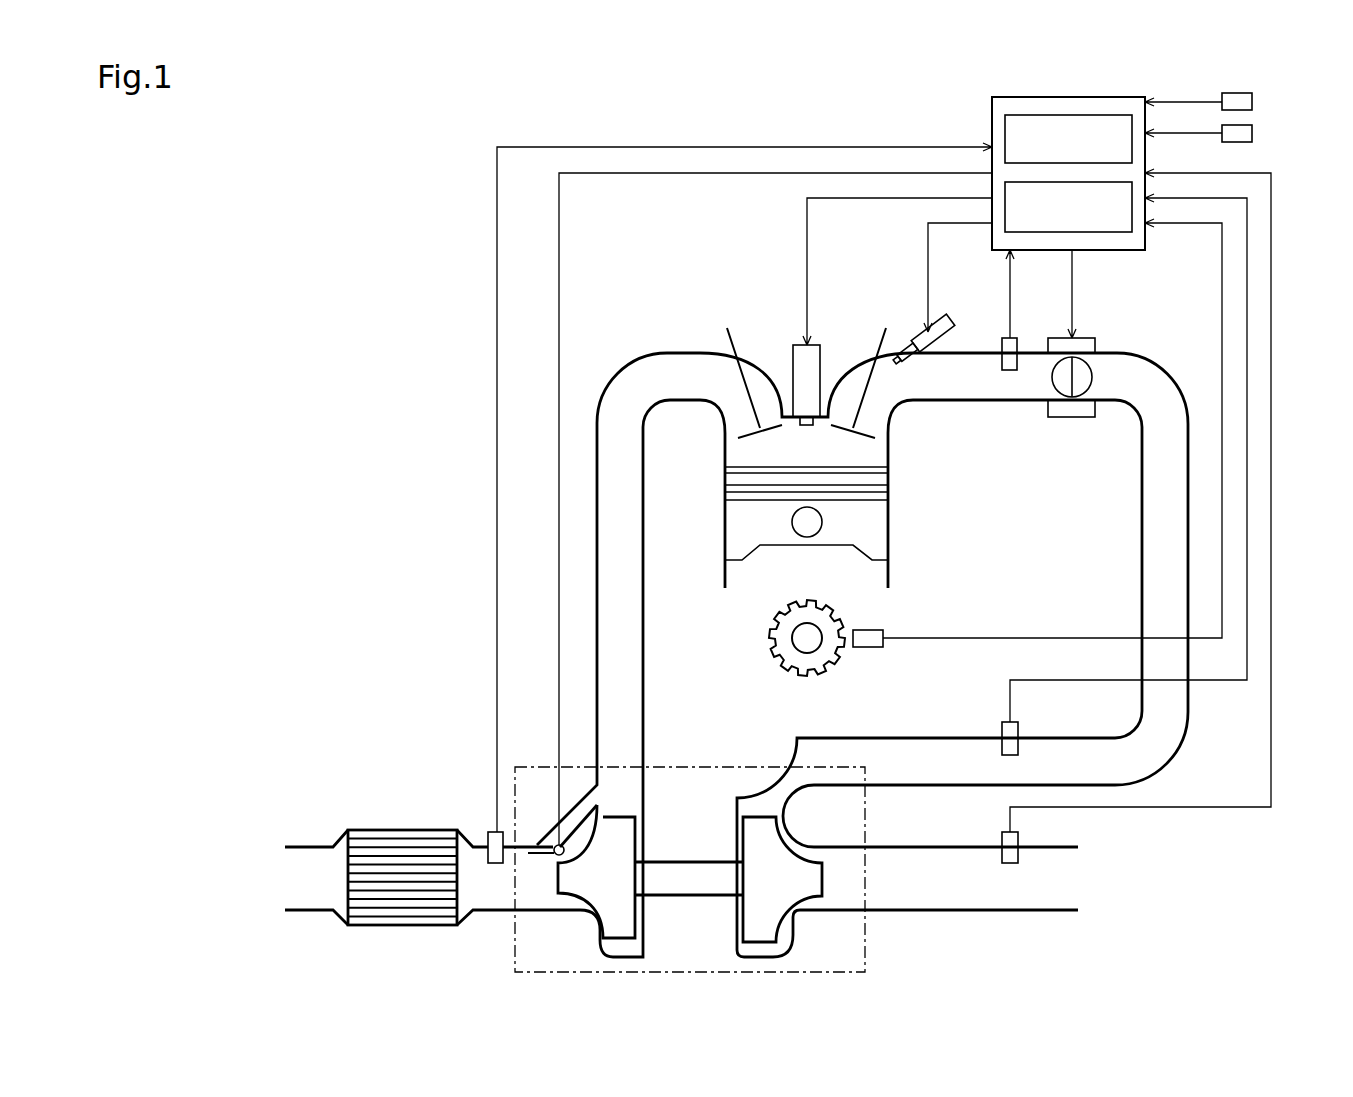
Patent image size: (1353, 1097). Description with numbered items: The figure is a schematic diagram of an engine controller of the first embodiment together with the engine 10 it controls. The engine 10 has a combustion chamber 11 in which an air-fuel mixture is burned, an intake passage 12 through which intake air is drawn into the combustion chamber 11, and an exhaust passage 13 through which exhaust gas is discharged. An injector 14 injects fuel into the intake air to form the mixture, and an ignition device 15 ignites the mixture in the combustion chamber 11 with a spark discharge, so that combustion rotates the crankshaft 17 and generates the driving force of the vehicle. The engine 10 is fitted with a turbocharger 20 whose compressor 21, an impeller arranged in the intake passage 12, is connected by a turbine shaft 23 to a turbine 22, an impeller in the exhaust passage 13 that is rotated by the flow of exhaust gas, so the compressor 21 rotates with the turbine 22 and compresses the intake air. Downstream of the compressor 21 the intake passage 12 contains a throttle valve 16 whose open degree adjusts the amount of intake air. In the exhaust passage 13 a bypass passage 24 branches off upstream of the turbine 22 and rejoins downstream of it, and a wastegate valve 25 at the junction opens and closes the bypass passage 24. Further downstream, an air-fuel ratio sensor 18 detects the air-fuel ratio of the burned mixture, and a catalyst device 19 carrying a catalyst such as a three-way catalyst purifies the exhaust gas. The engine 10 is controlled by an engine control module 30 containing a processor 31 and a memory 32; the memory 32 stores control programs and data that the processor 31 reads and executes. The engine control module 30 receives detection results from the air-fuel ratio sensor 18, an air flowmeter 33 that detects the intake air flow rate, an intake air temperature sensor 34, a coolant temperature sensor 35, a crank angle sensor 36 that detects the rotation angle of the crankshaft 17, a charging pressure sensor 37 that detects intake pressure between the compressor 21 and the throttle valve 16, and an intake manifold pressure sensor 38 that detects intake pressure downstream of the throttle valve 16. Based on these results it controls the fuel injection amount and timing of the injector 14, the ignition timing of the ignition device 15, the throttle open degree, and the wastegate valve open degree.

The engine 10 is at (634, 297).
The combustion chamber 11 is at (823, 455).
The intake passage 12 is at (1142, 597).
The exhaust passage 13 is at (638, 594).
The injector 14 is at (924, 338).
The ignition device 15 is at (822, 360).
The throttle valve 16 is at (1093, 378).
The crankshaft 17 is at (790, 648).
The air-fuel ratio sensor 18 is at (495, 864).
The catalyst device 19 is at (400, 830).
The turbocharger 20 is at (753, 572).
The compressor 21 is at (778, 910).
The turbine 22 is at (598, 918).
The turbine shaft 23 is at (688, 860).
The bypass passage 24 is at (558, 822).
The wastegate valve 25 is at (540, 862).
The engine control module 30 is at (1039, 181).
The processor 31 is at (1108, 115).
The memory 32 is at (1108, 250).
The air flowmeter 33 is at (1002, 852).
The intake air temperature sensor 34 is at (1252, 102).
The coolant temperature sensor 35 is at (1252, 133).
The crank angle sensor 36 is at (868, 648).
The charging pressure sensor 37 is at (1002, 742).
The intake manifold pressure sensor 38 is at (1002, 358).